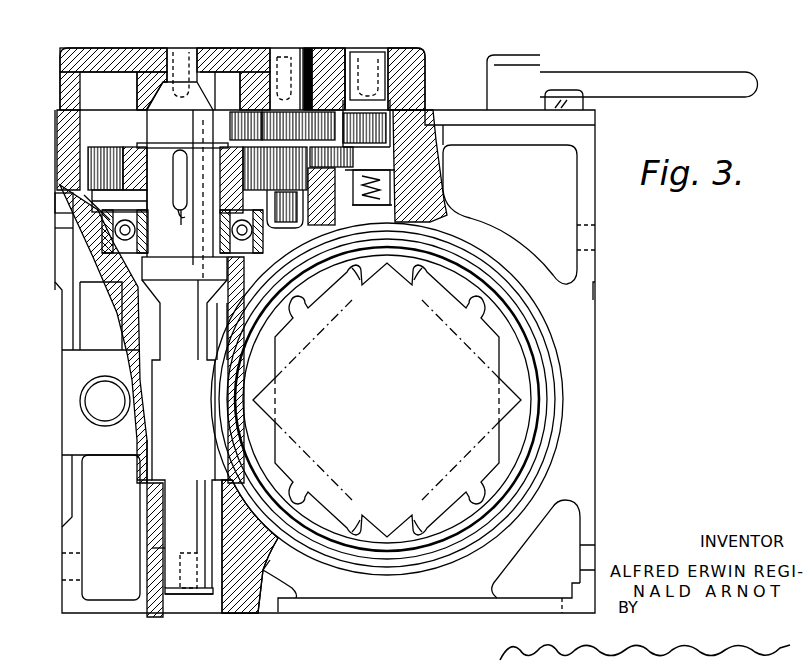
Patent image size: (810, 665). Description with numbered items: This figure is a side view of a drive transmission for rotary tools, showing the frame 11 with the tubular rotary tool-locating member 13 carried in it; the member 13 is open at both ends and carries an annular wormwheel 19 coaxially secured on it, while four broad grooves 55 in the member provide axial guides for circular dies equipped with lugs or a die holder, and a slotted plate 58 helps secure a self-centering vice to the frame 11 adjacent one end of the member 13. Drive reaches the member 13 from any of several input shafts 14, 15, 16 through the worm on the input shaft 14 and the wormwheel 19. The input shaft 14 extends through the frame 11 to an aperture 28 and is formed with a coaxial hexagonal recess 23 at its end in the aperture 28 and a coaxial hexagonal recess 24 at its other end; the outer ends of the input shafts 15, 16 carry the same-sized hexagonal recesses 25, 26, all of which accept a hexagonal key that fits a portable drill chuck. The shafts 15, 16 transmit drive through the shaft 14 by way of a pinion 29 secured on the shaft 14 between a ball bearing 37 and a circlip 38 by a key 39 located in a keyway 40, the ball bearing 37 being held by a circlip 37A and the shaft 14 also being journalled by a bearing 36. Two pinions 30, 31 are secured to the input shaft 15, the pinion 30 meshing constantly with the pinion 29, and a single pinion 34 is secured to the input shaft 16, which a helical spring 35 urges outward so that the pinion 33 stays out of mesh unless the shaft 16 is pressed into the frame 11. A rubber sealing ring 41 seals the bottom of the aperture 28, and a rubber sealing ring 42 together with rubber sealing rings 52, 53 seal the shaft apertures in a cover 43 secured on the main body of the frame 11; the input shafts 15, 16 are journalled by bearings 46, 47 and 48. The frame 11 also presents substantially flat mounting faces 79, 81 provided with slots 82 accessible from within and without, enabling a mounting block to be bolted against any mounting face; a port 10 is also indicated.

The port 10 is at (143, 427).
The frame 11 is at (572, 460).
The tubular rotary tool-locating member 13 is at (510, 350).
The input shaft 14 is at (170, 318).
The input shaft 15 is at (243, 118).
The input shaft 16 is at (380, 93).
The annular wormwheel 19 is at (298, 527).
The hexagonal recess 23 is at (182, 587).
The hexagonal recess 24 is at (175, 48).
The hexagonal recess 25 is at (284, 57).
The hexagonal recess 26 is at (374, 52).
The aperture 28 is at (217, 617).
The pinion 29 is at (112, 150).
The pinion 30 is at (300, 177).
The pinion 31 is at (248, 110).
The pinion 33 is at (340, 157).
The pinion 34 is at (380, 133).
The helical spring 35 is at (385, 187).
The bearing 36 is at (158, 508).
The ball bearing 37 is at (110, 230).
The circlip 37A is at (84, 195).
The circlip 38 is at (143, 140).
The key 39 is at (175, 178).
The keyway 40 is at (178, 216).
The rubber sealing ring 41 is at (155, 548).
The rubber sealing ring 42 is at (203, 60).
The cover 43 is at (72, 62).
The bearing 46 is at (322, 70).
The bearing 47 is at (350, 291).
The bearing 48 is at (392, 100).
The rubber sealing ring 52 is at (308, 60).
The rubber sealing ring 53 is at (400, 60).
The broad grooves 55 is at (420, 290).
The slotted plate 58 is at (578, 117).
The mounting face 79 is at (62, 313).
The mounting face 81 is at (595, 345).
The slots 82 is at (62, 238).